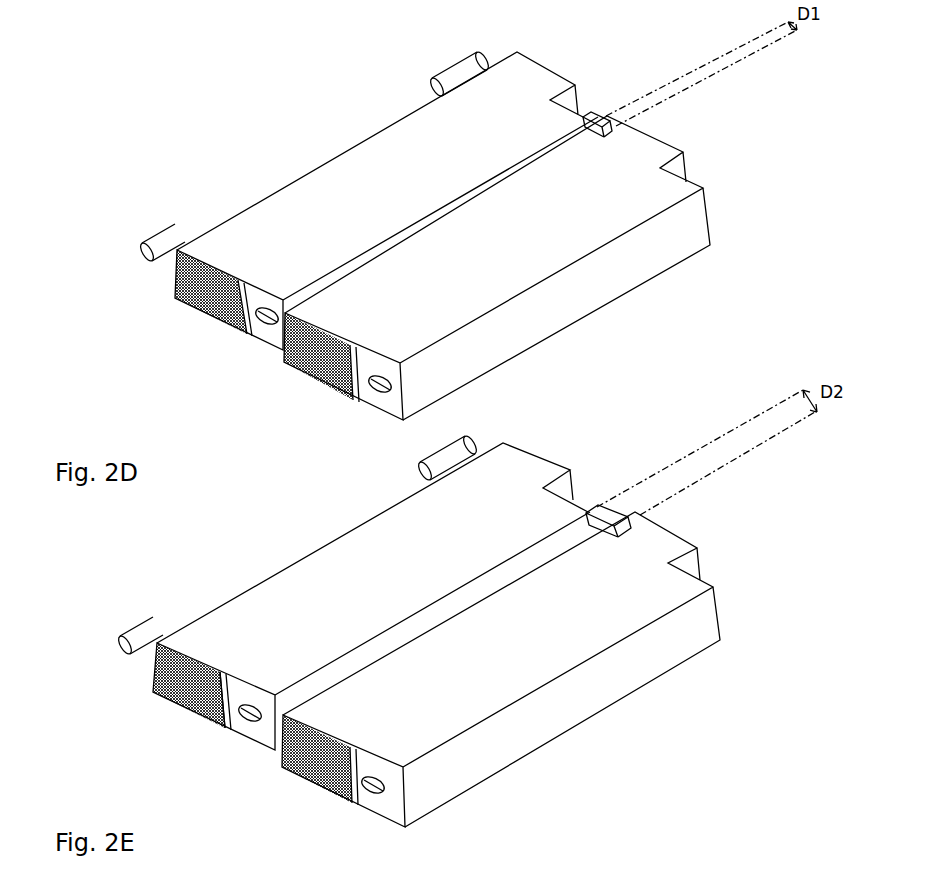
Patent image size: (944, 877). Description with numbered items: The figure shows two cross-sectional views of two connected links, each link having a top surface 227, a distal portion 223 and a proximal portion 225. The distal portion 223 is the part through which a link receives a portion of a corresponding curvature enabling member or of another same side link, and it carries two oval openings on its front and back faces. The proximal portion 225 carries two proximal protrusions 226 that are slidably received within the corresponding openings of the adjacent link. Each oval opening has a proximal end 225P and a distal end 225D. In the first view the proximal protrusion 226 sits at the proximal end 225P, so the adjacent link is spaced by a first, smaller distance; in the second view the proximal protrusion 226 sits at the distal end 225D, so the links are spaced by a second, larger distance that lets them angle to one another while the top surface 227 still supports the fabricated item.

In FIG. 2E, the distal portion 223 is at (557, 513).
In FIG. 2D, the proximal portion 225 is at (372, 386).
In FIG. 2E, the proximal portion 225 is at (647, 543).
In FIG. 2D, the proximal end 225P is at (246, 290).
In FIG. 2E, the distal end 225D is at (253, 708).
In FIG. 2D, the proximal protrusion 226 is at (430, 78).
In FIG. 2D, the top surface 227 is at (389, 190).
In FIG. 2E, the top surface 227 is at (394, 580).